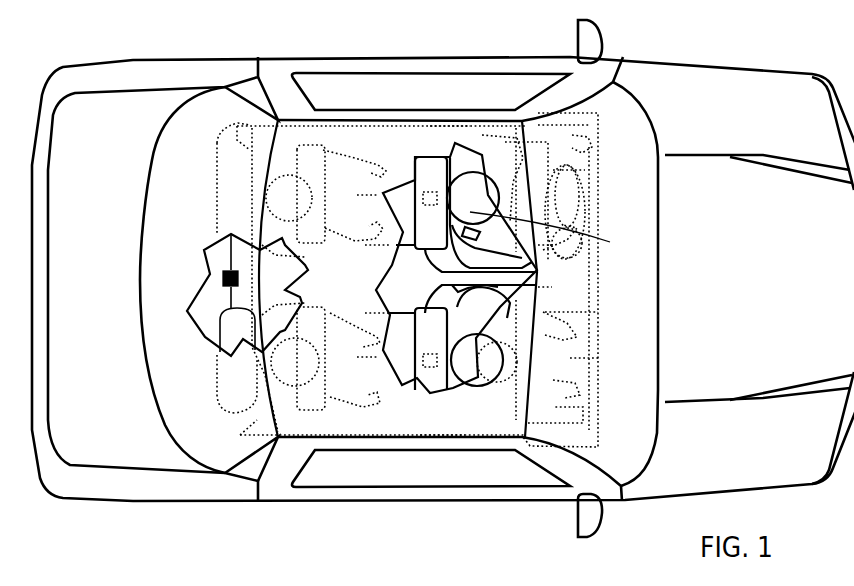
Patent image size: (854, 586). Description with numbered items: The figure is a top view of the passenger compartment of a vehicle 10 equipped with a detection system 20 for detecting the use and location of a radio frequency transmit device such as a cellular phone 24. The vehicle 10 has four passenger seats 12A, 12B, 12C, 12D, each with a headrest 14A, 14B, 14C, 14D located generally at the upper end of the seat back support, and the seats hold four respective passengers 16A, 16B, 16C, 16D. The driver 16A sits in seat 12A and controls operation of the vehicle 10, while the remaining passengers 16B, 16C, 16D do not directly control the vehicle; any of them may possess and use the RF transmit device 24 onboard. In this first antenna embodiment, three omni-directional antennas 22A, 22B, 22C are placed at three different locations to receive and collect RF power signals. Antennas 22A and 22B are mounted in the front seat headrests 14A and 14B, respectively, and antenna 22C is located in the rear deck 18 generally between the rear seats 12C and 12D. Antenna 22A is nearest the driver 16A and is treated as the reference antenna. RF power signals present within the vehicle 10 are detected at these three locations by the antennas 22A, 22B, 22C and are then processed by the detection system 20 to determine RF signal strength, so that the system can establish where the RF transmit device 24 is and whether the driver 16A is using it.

The vehicle 10 is at (729, 54).
The passenger seat 12A is at (450, 124).
The passenger seat 12B is at (443, 438).
The rear seat 12C is at (238, 132).
The rear seat 12D is at (248, 418).
The front seat headrest 14A is at (415, 160).
The front seat headrest 14B is at (413, 375).
The headrest 14C is at (217, 178).
The headrest 14D is at (230, 412).
The driver 16A is at (522, 170).
The passenger 16B is at (537, 369).
The passenger 16C is at (233, 163).
The passenger 16D is at (232, 367).
The rear deck 18 is at (210, 318).
The detection system 20 is at (385, 158).
The omni-directional antenna 22A is at (426, 192).
The omni-directional antenna 22B is at (428, 368).
The omni-directional antenna 22C is at (223, 277).
The RF transmit device 24 is at (549, 235).